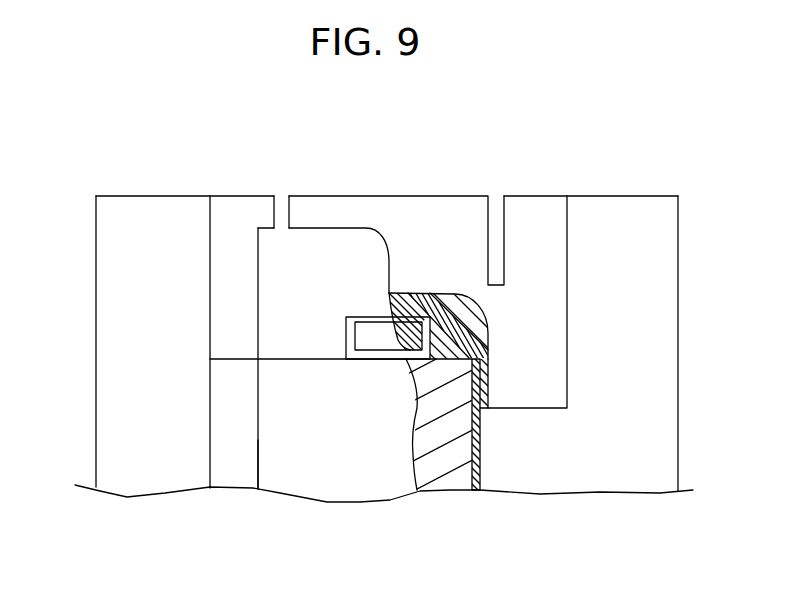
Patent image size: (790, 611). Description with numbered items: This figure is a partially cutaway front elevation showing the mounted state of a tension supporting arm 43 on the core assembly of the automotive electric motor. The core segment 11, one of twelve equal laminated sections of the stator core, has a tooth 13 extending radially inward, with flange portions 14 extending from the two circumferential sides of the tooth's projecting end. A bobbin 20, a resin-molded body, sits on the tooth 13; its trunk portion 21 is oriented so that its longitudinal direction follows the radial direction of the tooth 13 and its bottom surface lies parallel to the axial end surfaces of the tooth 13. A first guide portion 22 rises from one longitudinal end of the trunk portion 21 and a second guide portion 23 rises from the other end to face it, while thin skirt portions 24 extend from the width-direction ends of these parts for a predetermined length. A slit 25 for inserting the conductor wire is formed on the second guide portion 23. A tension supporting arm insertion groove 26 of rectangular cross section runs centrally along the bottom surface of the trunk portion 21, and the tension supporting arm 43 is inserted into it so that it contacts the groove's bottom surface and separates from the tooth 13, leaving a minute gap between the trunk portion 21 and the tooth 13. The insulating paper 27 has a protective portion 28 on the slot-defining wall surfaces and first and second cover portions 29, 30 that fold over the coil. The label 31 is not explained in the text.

The core segment 11 is at (349, 470).
The tooth 13 is at (447, 475).
The flange portion 14 is at (277, 467).
The bobbin 20 is at (471, 196).
The trunk portion 21 is at (447, 307).
The first guide portion 22 is at (341, 236).
The second guide portion 23 is at (242, 208).
The skirt portion 24 is at (522, 392).
The slit 25 is at (281, 210).
The tension supporting arm insertion groove 26 is at (370, 333).
The insulating paper 27 is at (148, 196).
The protective portion 28 is at (475, 490).
The first cover portion 29 is at (233, 472).
The second cover portion 30 is at (160, 480).
The seal arrangement 31 is at (151, 117).
The tension supporting arm 43 is at (400, 325).